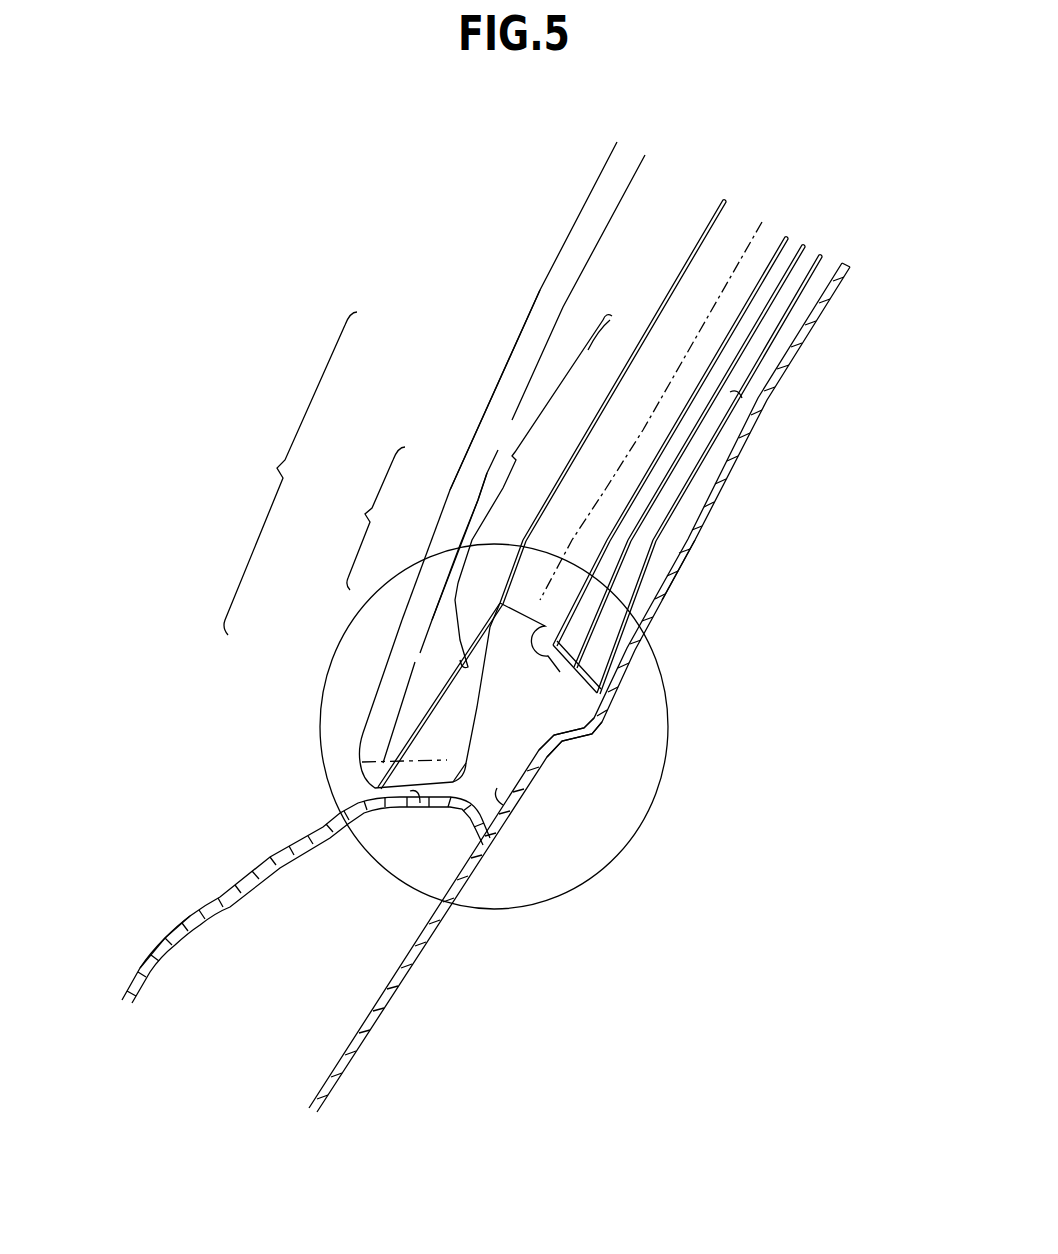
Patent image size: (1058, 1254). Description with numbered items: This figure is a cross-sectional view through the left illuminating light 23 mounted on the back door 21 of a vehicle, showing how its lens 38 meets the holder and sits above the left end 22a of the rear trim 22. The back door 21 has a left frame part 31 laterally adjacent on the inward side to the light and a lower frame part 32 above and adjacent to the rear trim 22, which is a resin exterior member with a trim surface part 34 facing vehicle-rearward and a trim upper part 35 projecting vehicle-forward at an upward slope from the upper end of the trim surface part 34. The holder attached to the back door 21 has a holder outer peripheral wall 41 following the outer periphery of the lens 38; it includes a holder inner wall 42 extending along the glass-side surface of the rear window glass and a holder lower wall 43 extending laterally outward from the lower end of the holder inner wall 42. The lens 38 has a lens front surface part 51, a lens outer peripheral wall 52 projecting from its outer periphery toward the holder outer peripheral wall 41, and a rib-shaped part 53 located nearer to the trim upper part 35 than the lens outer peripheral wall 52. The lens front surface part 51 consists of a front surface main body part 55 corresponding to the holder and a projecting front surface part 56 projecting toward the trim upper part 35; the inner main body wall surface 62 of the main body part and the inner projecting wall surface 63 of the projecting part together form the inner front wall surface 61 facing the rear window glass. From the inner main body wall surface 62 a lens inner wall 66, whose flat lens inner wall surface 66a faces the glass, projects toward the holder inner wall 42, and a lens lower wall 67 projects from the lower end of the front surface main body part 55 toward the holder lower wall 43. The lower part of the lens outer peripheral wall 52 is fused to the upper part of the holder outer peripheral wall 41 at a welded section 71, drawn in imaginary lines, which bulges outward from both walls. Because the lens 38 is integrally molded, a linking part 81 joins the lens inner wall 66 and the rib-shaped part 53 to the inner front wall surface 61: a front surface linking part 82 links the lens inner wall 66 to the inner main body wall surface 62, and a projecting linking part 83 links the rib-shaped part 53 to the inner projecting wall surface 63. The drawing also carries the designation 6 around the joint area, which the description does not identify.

The enlarged detail region 6 is at (670, 715).
The back door 21 is at (662, 607).
The rear trim 22 is at (183, 918).
The left end of the rear trim 22a is at (168, 935).
The left illuminating light 23 is at (557, 186).
The left frame part 31 is at (737, 397).
The lower frame part 32 is at (503, 805).
The trim surface part 34 is at (233, 884).
The trim upper part 35 is at (415, 798).
The lens 38 is at (540, 284).
The holder outer peripheral wall 41 is at (697, 427).
The holder inner wall 42 is at (678, 442).
The holder lower wall 43 is at (572, 740).
The lens front surface part 51 is at (290, 473).
The lens outer peripheral wall 52 is at (725, 247).
The rib-shaped part 53 is at (452, 740).
The front surface main body part 55 is at (513, 370).
The projecting front surface part 56 is at (398, 660).
The inner front wall surface 61 is at (367, 518).
The inner main body wall surface 62 is at (497, 463).
The inner projecting wall surface 63 is at (438, 642).
The lens inner wall 66 is at (688, 323).
The lens inner wall surface 66a is at (707, 272).
The lens lower wall 67 is at (512, 613).
The welded section 71 is at (697, 553).
The linking part 81 is at (488, 473).
The front surface linking part 82 is at (612, 412).
The projecting linking part 83 is at (463, 660).